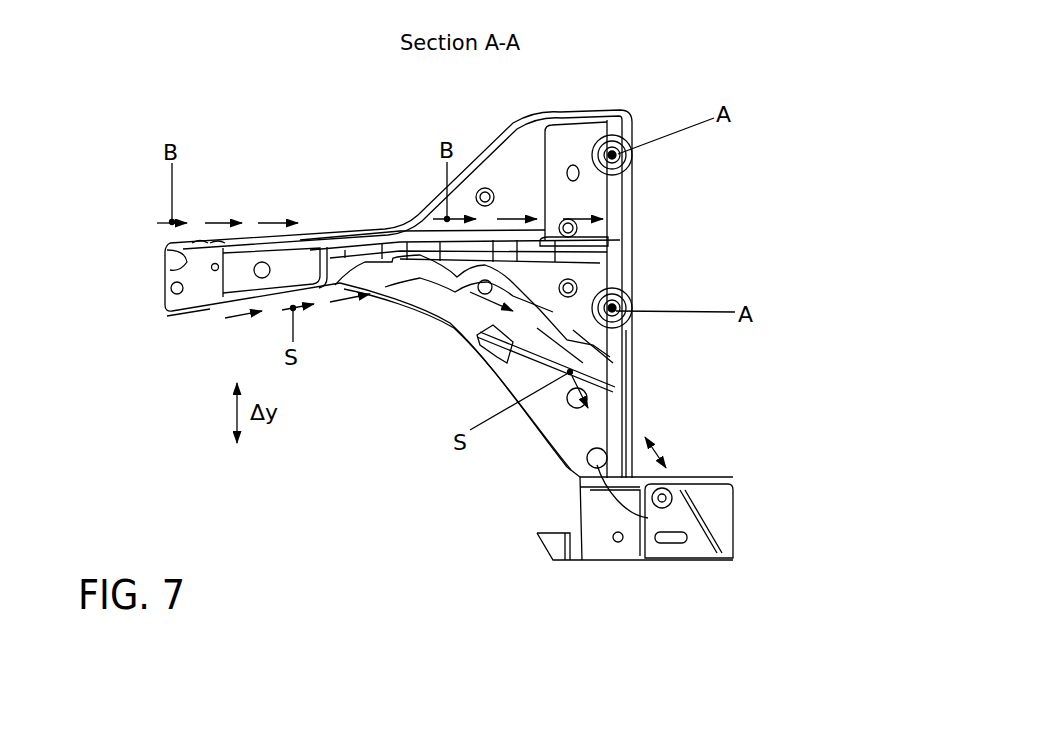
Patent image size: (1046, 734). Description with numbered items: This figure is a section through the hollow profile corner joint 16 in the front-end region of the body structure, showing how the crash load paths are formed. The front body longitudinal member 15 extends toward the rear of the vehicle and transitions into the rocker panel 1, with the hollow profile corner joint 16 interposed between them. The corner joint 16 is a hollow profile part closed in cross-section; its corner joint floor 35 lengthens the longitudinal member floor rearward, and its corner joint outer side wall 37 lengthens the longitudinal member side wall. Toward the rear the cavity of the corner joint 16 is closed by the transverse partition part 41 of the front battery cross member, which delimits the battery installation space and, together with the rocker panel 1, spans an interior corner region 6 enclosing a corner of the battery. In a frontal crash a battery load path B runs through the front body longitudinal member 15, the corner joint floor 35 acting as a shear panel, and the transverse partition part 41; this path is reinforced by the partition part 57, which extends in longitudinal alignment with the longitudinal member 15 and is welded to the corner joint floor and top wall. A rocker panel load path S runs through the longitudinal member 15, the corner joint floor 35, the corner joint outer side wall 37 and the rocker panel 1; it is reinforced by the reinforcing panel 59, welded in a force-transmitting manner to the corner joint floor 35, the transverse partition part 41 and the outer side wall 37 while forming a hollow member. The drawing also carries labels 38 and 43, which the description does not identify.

The rocker panel 1 is at (720, 520).
The interior corner region 6 is at (658, 452).
The front body longitudinal member 15 is at (205, 302).
The hollow profile corner joint 16 is at (745, 145).
The corner joint floor 35 is at (570, 196).
The corner joint outer side wall 37 is at (445, 323).
The space below member 38 is at (374, 450).
The transverse partition part 41 is at (636, 248).
The reinforcement 43 is at (590, 278).
The partition part 57 is at (505, 238).
The reinforcing panel 59 is at (547, 311).